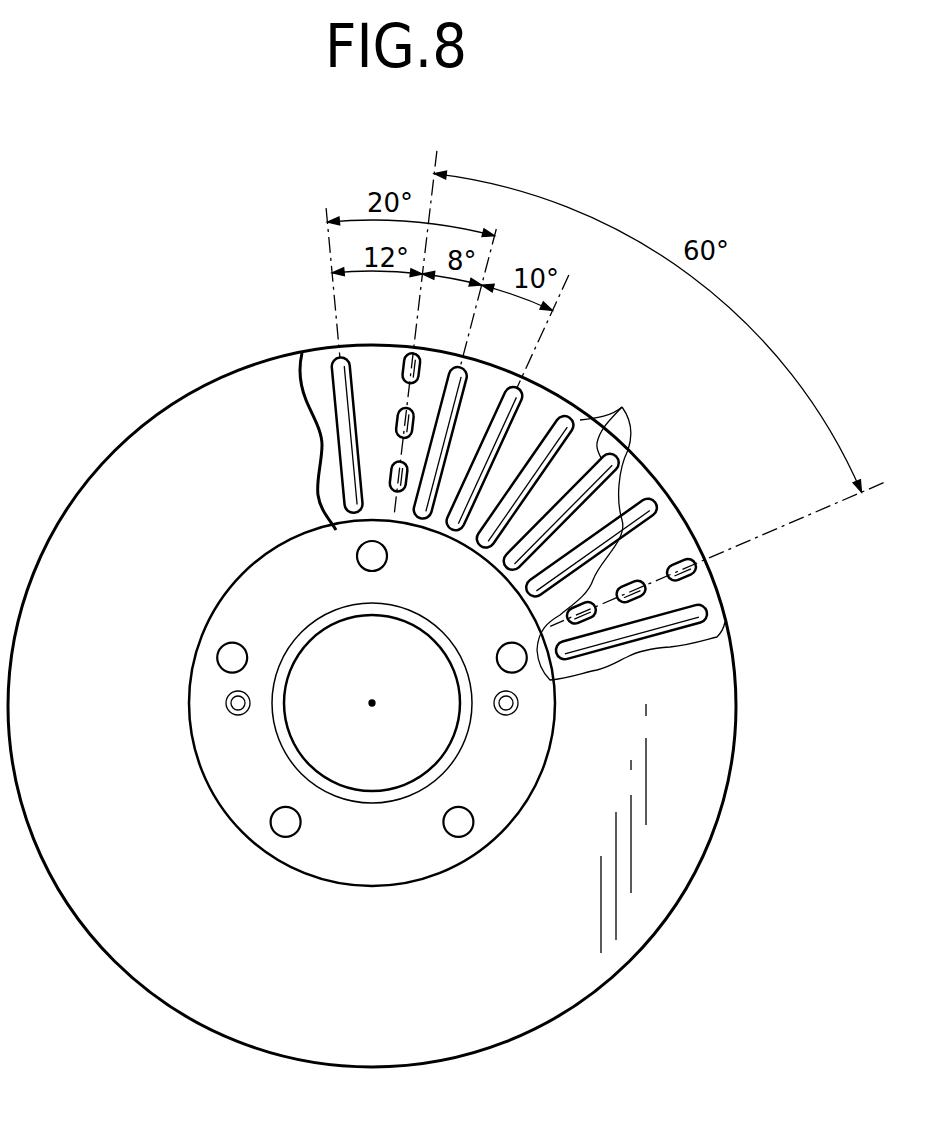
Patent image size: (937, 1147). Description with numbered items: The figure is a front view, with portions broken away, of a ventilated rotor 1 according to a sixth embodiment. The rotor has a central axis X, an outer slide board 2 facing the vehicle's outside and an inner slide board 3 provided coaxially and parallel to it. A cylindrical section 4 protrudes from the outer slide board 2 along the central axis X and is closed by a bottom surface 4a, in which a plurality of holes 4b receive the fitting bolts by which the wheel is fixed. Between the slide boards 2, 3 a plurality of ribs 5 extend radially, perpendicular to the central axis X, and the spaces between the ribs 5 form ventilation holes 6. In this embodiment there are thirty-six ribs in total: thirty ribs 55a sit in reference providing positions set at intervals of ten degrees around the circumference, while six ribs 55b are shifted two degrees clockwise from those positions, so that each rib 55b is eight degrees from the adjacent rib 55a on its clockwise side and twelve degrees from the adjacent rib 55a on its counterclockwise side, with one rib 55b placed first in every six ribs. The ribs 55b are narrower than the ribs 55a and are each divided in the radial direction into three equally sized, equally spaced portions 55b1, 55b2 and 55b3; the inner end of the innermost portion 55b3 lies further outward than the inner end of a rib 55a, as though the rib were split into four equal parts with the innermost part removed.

The ventilated rotor 1 is at (790, 742).
The slide board 2 is at (715, 624).
The slide board 3 is at (700, 803).
The cylindrical section 4 is at (345, 816).
The bottom surface 4a is at (470, 765).
The holes 4b is at (384, 561).
The ribs 5 is at (622, 407).
The ventilation holes 6 is at (555, 390).
The ribs 55a is at (336, 530).
The ribs 55b is at (272, 291).
The portion 55b1 is at (403, 366).
The portion 55b2 is at (396, 422).
The portion 55b3 is at (390, 478).
The central axis X is at (374, 703).